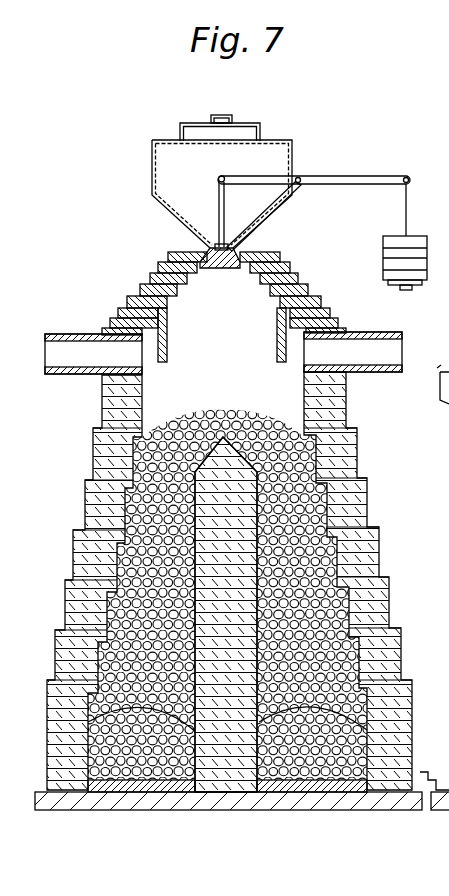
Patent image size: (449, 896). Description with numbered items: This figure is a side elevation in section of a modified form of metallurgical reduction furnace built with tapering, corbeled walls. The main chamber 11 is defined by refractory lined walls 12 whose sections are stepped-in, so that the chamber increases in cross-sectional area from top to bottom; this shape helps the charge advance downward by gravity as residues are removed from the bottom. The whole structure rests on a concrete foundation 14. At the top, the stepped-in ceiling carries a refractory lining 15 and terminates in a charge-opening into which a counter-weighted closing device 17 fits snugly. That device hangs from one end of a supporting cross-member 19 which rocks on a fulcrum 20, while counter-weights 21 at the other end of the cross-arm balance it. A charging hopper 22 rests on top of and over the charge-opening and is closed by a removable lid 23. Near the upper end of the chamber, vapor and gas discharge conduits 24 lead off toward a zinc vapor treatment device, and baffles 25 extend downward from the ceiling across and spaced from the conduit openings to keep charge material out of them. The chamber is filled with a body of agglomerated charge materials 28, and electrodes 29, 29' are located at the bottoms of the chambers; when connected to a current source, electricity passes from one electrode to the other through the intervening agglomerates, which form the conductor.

The main chamber 11 is at (224, 406).
The refractory lined walls 12 is at (143, 417).
The concrete foundation 14 is at (76, 812).
The refractory lining 15 is at (148, 283).
The counter-weighted closing device 17 is at (216, 270).
The supporting cross-member 19 is at (362, 176).
The fulcrum 20 is at (299, 177).
The counter-weights 21 is at (423, 244).
The charging hopper 22 is at (152, 178).
The removable lid 23 is at (179, 123).
The vapor and gas discharge conduits 24 is at (58, 362).
The baffles 25 is at (277, 337).
The agglomerated charge materials 28 is at (218, 413).
The electrode 29 is at (141, 813).
The electrode 29' is at (312, 814).